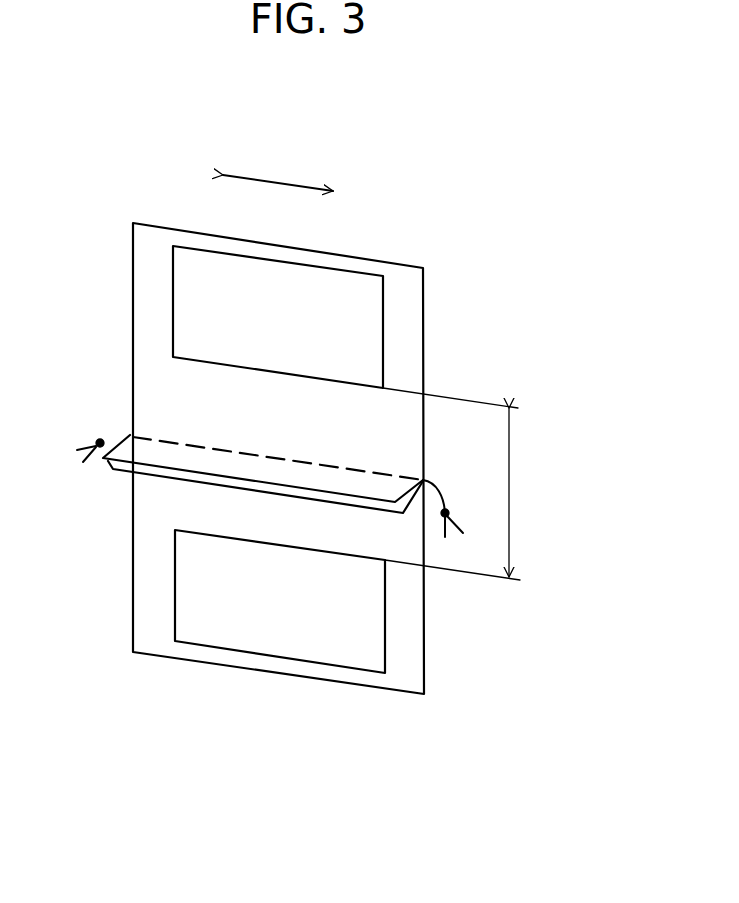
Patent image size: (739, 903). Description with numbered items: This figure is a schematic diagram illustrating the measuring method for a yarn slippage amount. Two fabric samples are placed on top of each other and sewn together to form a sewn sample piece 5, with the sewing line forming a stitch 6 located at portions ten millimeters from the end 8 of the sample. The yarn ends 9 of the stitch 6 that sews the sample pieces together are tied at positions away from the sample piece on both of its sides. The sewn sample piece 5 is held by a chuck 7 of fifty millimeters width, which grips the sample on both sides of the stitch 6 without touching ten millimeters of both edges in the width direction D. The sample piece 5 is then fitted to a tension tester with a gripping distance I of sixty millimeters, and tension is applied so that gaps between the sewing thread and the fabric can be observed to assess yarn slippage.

The sewn sample piece 5 is at (445, 305).
The stitch 6 is at (177, 443).
The chuck 7 is at (355, 290).
The end 8 is at (112, 477).
The yarn ends 9 is at (128, 436).
The width direction D is at (278, 182).
The gripping distance I is at (510, 493).